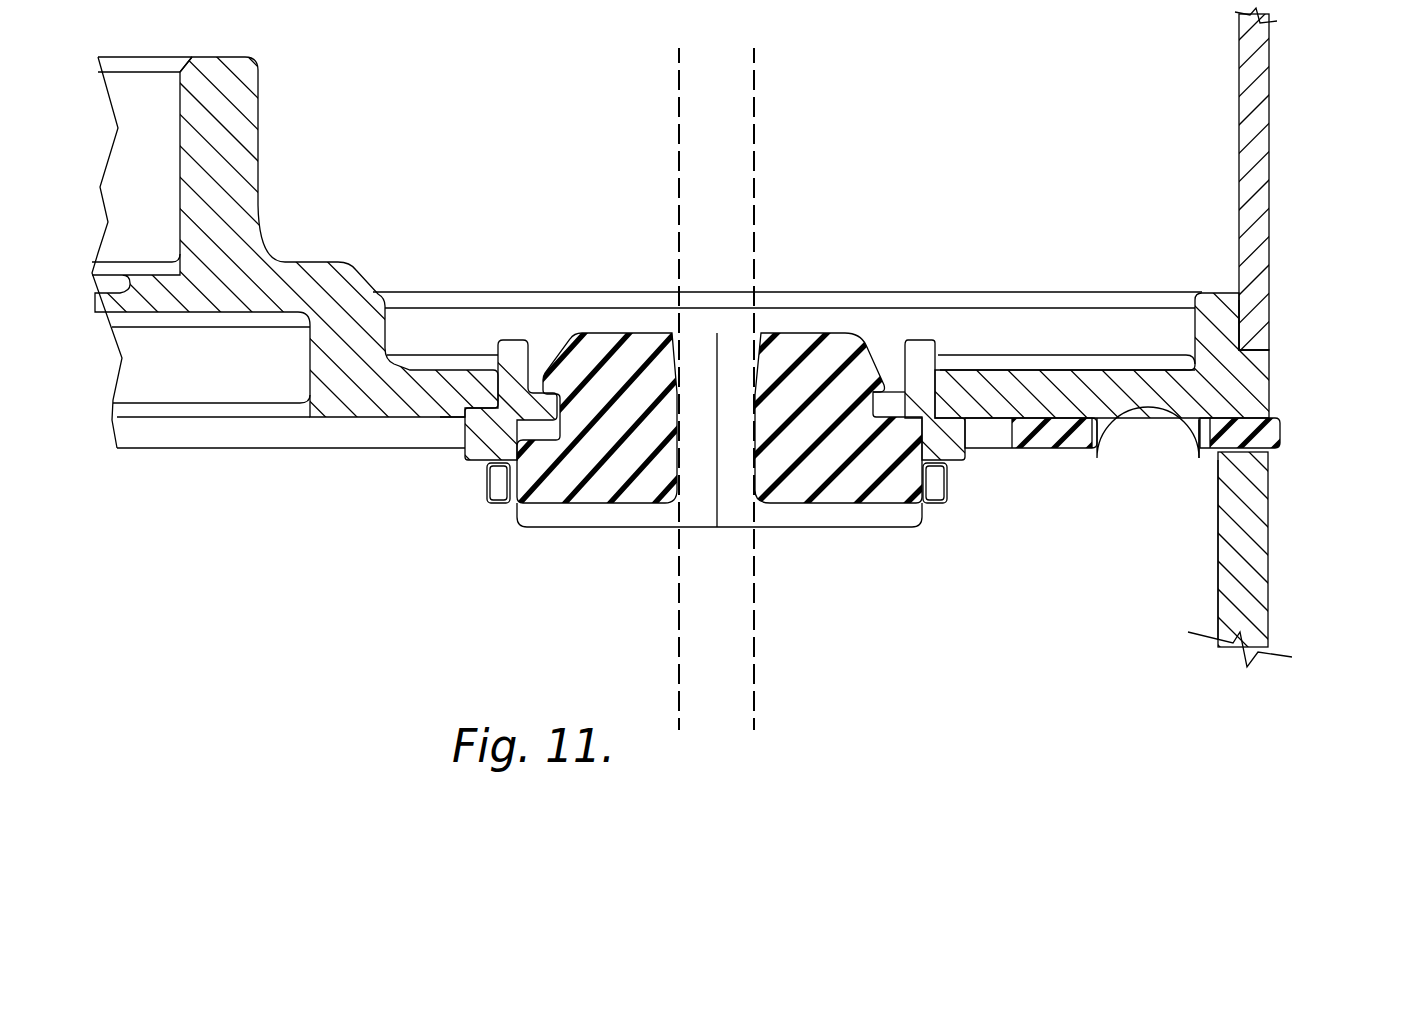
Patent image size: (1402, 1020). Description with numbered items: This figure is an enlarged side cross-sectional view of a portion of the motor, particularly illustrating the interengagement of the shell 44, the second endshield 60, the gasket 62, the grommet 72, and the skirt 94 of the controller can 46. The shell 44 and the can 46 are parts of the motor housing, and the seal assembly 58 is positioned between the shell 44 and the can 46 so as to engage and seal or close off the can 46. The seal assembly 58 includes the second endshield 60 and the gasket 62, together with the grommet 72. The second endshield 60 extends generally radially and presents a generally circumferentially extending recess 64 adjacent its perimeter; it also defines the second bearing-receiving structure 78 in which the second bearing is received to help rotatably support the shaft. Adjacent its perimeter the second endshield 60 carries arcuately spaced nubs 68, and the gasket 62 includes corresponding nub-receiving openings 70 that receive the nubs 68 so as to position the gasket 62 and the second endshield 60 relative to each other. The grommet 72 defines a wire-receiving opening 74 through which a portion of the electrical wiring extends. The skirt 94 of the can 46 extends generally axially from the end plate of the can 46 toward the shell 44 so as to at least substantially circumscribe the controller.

The shell 44 is at (1252, 70).
The controller can 46 is at (1263, 605).
The seal assembly 58 is at (1283, 402).
The second endshield 60 is at (1271, 362).
The gasket 62 is at (1287, 445).
The recess 64 is at (1248, 321).
The nub 68 is at (1138, 490).
The nub-receiving opening 70 is at (1203, 463).
The grommet 72 is at (905, 492).
The wire-receiving opening 74 is at (731, 482).
The second bearing-receiving structure 78 is at (228, 127).
The skirt 94 is at (1253, 553).